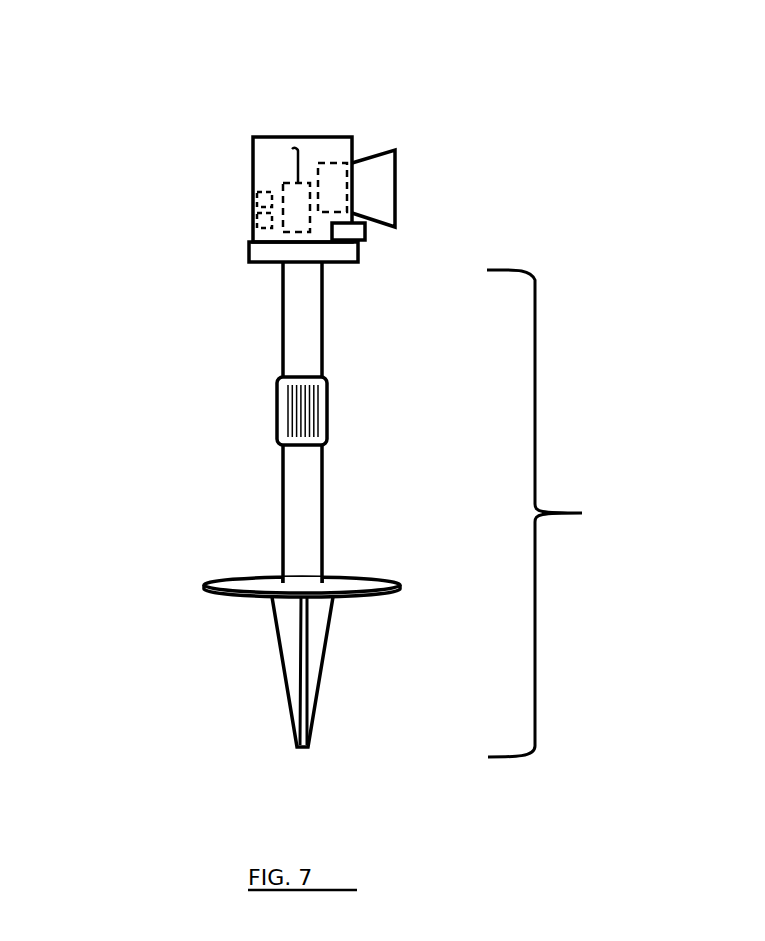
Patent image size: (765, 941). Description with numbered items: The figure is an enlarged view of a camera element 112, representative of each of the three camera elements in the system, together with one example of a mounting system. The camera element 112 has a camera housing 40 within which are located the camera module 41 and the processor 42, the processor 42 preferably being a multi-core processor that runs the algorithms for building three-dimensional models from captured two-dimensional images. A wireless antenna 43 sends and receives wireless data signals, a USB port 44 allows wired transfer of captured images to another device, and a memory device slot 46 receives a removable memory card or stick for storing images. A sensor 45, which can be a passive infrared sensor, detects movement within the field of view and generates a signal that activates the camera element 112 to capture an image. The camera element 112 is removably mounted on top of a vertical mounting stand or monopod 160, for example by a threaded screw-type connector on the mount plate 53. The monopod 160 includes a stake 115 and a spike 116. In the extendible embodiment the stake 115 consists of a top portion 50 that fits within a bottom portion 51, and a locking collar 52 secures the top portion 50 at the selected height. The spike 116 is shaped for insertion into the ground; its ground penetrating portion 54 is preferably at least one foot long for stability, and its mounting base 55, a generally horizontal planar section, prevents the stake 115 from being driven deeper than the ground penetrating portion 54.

The camera element 112 is at (207, 110).
The camera housing 40 is at (268, 143).
The camera module 41 is at (330, 170).
The processor 42 is at (293, 200).
The wireless antenna 43 is at (298, 172).
The USB port 44 is at (257, 217).
The sensor 45 is at (367, 232).
The memory device slot 46 is at (257, 198).
The mount plate 53 is at (250, 258).
The stake 115 is at (290, 422).
The top portion 50 is at (323, 338).
The bottom portion 51 is at (323, 490).
The locking collar 52 is at (327, 420).
The spike 116 is at (255, 640).
The mounting base 55 is at (375, 585).
The ground penetrating portion 54 is at (285, 685).
The monopod 160 is at (567, 513).